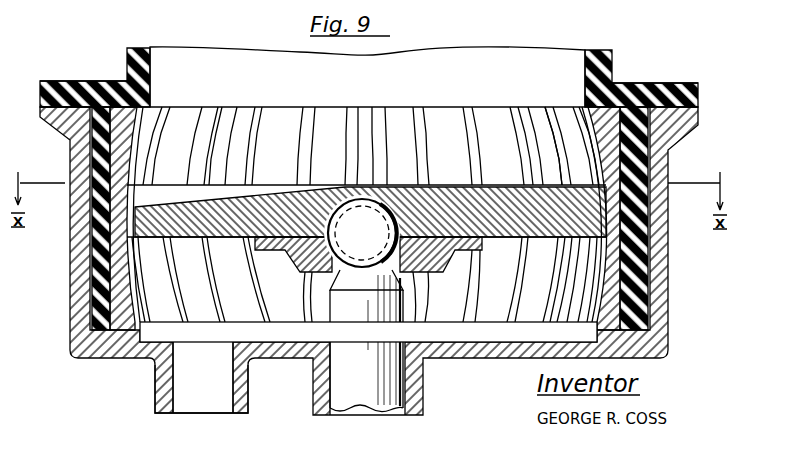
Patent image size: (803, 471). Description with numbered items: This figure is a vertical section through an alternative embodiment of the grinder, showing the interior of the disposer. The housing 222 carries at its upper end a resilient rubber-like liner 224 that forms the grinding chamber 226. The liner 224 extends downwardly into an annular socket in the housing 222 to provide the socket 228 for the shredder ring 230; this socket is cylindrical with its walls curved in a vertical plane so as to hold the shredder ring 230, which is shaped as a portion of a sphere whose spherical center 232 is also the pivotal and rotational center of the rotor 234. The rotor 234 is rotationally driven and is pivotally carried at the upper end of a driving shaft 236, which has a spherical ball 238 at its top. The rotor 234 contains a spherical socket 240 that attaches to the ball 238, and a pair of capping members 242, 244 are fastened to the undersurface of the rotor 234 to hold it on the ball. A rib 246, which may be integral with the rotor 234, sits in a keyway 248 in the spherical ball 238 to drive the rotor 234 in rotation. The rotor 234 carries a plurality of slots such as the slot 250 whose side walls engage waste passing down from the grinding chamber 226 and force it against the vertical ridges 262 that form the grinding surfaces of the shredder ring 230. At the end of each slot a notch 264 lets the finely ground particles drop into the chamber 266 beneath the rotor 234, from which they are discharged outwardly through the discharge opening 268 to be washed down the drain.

The housing 222 is at (668, 275).
The resilient rubber-like liner 224 is at (613, 58).
The grinding chamber 226 is at (542, 62).
The socket 228 is at (645, 83).
The shredder ring 230 is at (500, 100).
The spherical center 232 is at (352, 242).
The rotor 234 is at (540, 110).
The driving shaft 236 is at (388, 410).
The spherical ball 238 is at (386, 110).
The spherical socket 240 is at (346, 110).
The capping member 242 is at (440, 270).
The capping member 244 is at (312, 273).
The rib 246 is at (403, 238).
The keyway 248 is at (390, 202).
The slot 250 is at (238, 133).
The vertical ridges 262 is at (293, 115).
The notch 264 is at (133, 222).
The chamber 266 is at (283, 333).
The discharge opening 268 is at (213, 412).